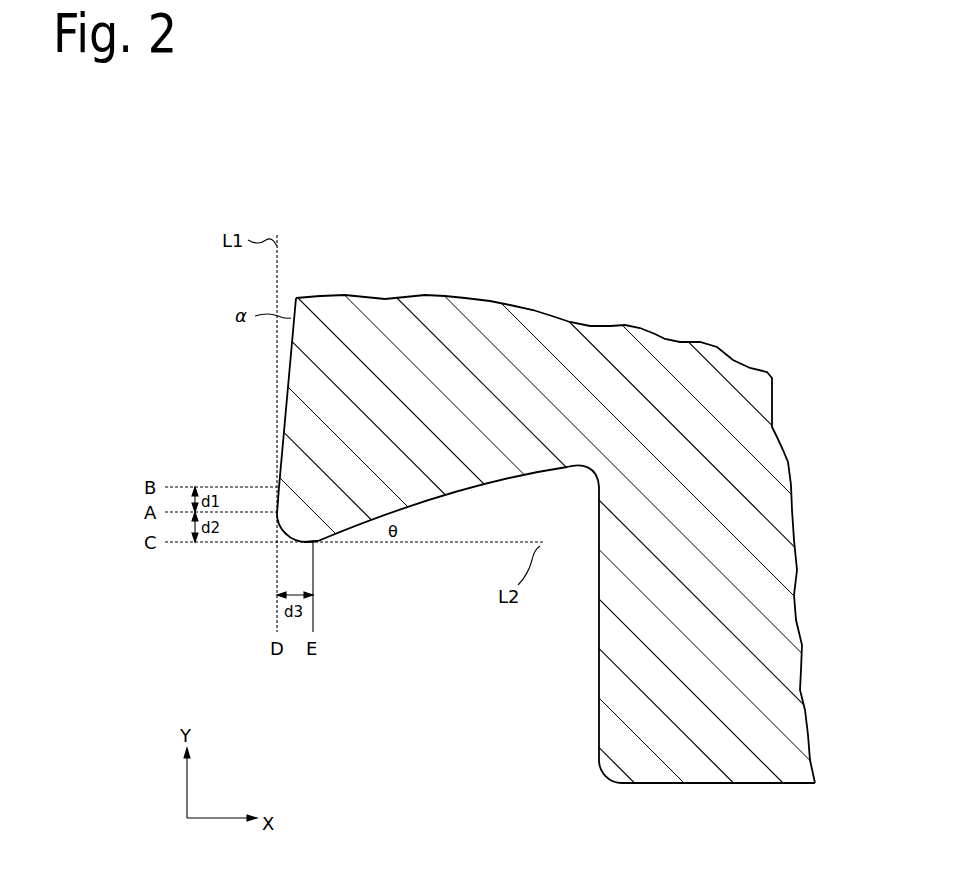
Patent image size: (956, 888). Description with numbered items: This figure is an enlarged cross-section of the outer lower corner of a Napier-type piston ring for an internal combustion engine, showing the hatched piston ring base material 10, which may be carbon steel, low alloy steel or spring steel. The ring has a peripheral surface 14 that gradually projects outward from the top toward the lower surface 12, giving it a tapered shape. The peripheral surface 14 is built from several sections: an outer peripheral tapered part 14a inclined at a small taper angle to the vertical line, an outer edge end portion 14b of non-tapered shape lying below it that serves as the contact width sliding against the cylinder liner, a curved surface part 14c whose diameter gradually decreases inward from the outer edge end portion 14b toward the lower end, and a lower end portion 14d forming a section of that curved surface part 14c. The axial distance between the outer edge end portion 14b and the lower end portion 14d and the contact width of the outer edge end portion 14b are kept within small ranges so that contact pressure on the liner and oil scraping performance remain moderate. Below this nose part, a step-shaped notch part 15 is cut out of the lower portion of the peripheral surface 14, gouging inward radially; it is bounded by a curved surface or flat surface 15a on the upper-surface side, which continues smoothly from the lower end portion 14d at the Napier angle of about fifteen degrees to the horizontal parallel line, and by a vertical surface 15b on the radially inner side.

The piston ring base material 10 is at (660, 352).
The lower surface 12 is at (709, 784).
The peripheral surface 14 is at (273, 458).
The outer peripheral tapered part 14a is at (289, 355).
The outer edge end portion 14b is at (277, 500).
The curved surface part 14c is at (278, 546).
The lower end portion 14d is at (320, 545).
The notch part 15 is at (470, 624).
The curved surface or flat surface 15a is at (441, 504).
The vertical surface 15b is at (598, 710).